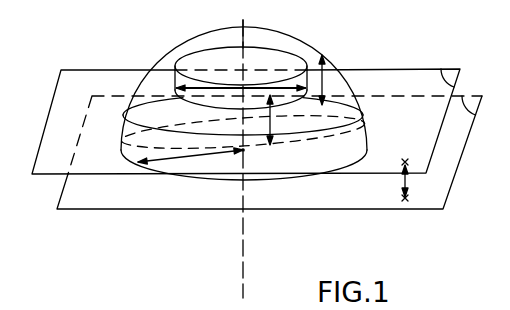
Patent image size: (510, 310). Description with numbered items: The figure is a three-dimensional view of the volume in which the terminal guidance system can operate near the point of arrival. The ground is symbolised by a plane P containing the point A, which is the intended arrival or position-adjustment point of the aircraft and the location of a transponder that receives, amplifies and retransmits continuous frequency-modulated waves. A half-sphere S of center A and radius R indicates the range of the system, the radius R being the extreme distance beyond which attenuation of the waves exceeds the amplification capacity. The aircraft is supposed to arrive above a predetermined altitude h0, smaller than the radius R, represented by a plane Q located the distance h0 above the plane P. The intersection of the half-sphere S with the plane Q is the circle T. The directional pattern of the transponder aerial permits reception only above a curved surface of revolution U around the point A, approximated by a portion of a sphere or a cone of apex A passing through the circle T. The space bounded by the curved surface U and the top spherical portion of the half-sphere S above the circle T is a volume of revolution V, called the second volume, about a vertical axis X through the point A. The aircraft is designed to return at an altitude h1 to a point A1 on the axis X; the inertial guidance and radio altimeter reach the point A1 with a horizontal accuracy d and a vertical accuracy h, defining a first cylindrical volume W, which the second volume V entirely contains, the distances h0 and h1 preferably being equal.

The circle T is at (190, 52).
The horizontal accuracy d is at (241, 75).
The return point on axis A1 is at (256, 34).
The first cylindrical volume W is at (285, 72).
The half-sphere S is at (316, 44).
The second volume V is at (330, 122).
The vertical accuracy h is at (331, 80).
The plane Q is at (246, 121).
The ground plane P is at (269, 152).
The return altitude h1 is at (364, 114).
The curved surface of revolution U is at (292, 145).
The point of arrival A is at (244, 162).
The radius of half-sphere R is at (188, 157).
The predetermined altitude h0 is at (418, 180).
The vertical axis X is at (243, 263).